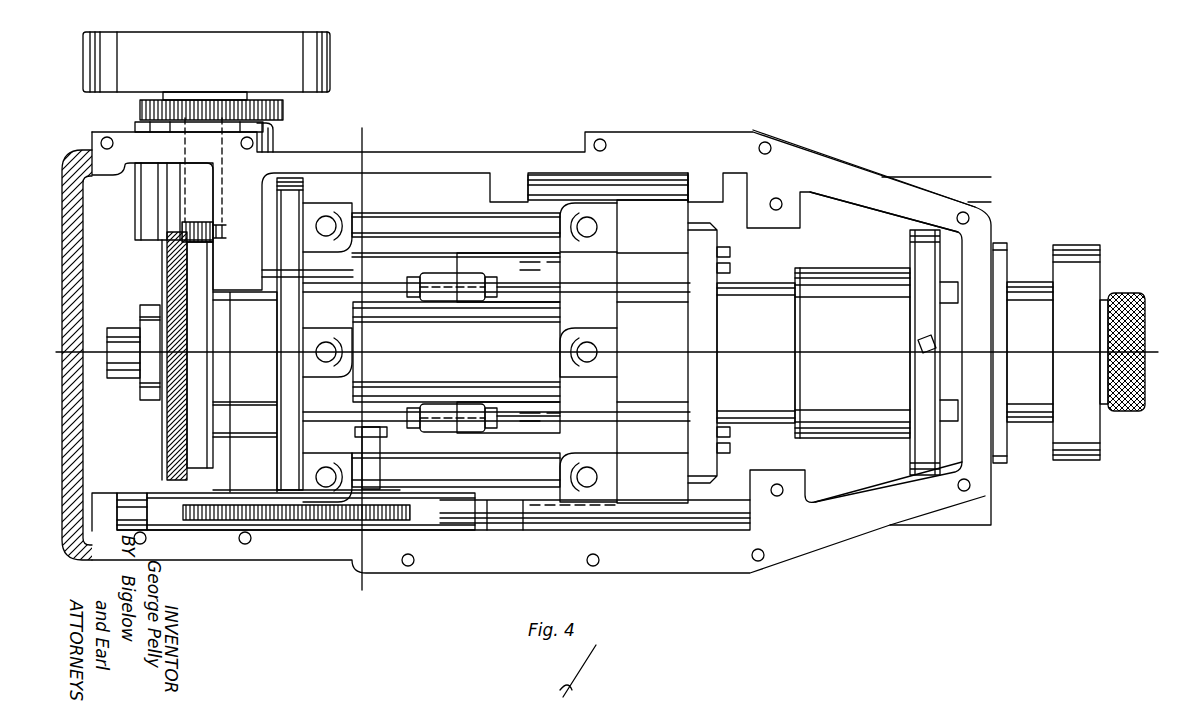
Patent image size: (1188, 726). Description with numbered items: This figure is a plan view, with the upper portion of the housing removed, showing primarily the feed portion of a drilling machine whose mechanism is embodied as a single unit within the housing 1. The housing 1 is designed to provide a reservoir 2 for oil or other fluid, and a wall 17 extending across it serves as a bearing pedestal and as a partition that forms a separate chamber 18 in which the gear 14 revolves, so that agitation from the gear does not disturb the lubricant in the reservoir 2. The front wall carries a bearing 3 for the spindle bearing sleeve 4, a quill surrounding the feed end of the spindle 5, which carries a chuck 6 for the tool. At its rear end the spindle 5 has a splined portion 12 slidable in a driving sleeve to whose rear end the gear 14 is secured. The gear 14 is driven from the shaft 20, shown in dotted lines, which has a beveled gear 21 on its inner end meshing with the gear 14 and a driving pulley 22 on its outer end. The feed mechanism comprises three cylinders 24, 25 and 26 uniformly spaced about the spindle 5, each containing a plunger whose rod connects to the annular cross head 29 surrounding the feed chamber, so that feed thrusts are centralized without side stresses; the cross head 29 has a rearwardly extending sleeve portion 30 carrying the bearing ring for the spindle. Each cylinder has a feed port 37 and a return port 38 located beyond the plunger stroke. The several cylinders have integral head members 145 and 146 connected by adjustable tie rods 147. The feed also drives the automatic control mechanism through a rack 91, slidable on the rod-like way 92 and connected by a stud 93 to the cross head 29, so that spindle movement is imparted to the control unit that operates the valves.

The housing 1 is at (822, 548).
The reservoir 2 is at (852, 490).
The bearing 3 is at (838, 277).
The spindle bearing sleeve 4 is at (753, 293).
The spindle 5 is at (128, 378).
The chuck 6 is at (1123, 292).
The splined portion 12 is at (117, 378).
The gear 14 is at (167, 456).
The wall 17 is at (225, 472).
The chamber 18 is at (157, 483).
The shaft 20 is at (225, 190).
The beveled gear 21 is at (173, 236).
The driving pulley 22 is at (330, 74).
The cylinder 24 is at (410, 223).
The cylinder 25 is at (467, 473).
The cylinder 26 is at (377, 333).
The annular cross head 29 is at (717, 452).
The sleeve portion 30 is at (613, 300).
The feed port 37 is at (327, 216).
The return port 38 is at (592, 227).
The rack 91 is at (410, 520).
The rod-like way 92 is at (510, 522).
The stud 93 is at (392, 437).
The head member 145 is at (288, 183).
The head member 146 is at (652, 187).
The adjustable tie rod 147 is at (433, 282).